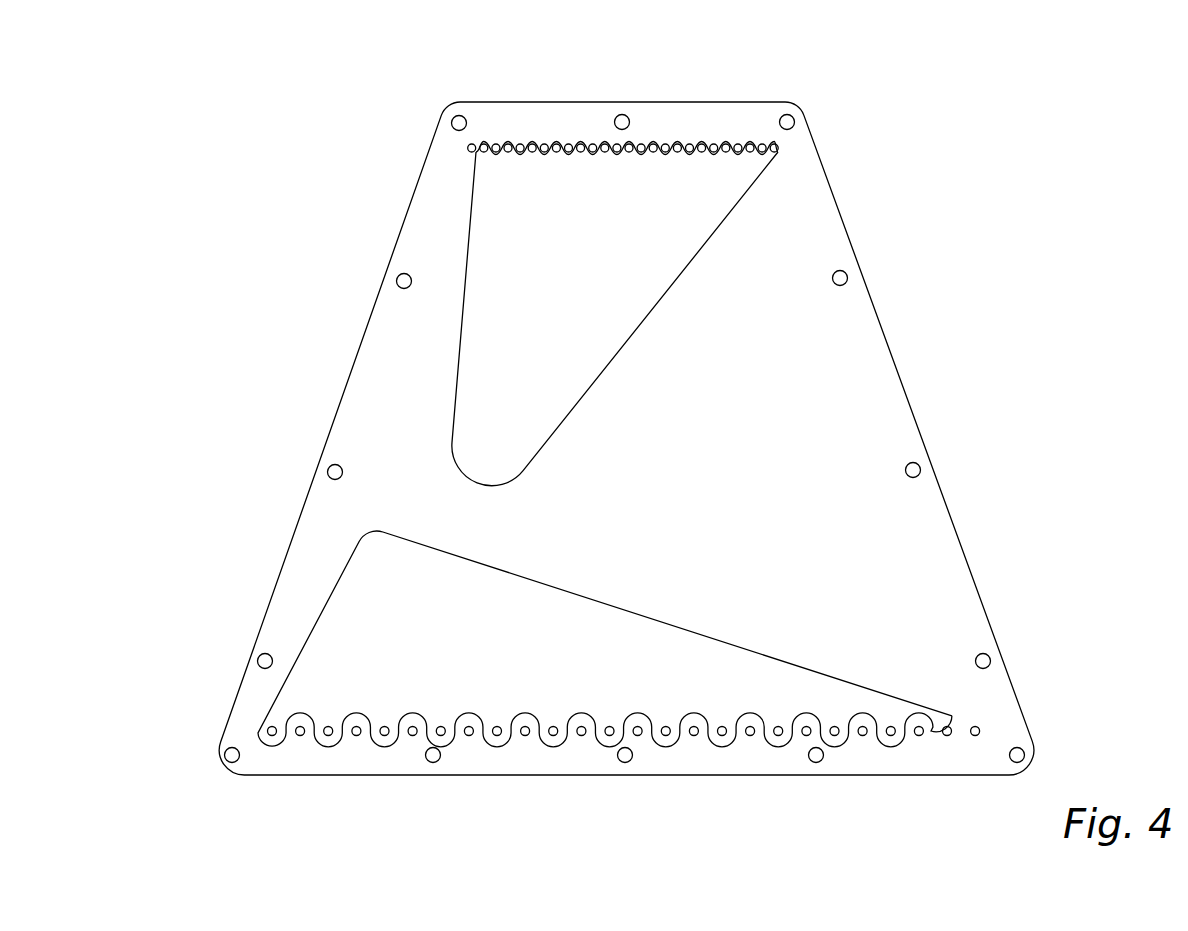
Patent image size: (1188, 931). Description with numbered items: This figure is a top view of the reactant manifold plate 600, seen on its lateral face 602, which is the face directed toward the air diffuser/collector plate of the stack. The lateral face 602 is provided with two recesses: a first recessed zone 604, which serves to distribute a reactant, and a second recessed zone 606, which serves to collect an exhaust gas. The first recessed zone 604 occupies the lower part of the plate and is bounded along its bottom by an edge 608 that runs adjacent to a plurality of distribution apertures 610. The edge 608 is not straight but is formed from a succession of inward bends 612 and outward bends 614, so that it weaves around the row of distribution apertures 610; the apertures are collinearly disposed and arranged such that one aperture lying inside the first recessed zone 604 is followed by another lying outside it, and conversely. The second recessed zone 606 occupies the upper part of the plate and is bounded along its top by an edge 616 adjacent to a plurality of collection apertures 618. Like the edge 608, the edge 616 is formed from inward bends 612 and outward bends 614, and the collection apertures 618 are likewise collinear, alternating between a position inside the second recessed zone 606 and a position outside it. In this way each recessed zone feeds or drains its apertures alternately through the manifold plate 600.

The reactant manifold plate 600 is at (338, 332).
The lateral face 602 is at (715, 355).
The first recessed zone 604 is at (425, 598).
The second recessed zone 606 is at (563, 233).
The edge 608 is at (792, 729).
The distribution apertures 610 is at (550, 737).
The inward bends 612 is at (678, 737).
The outward bends 614 is at (490, 740).
The edge 616 is at (710, 142).
The collection apertures 618 is at (588, 145).